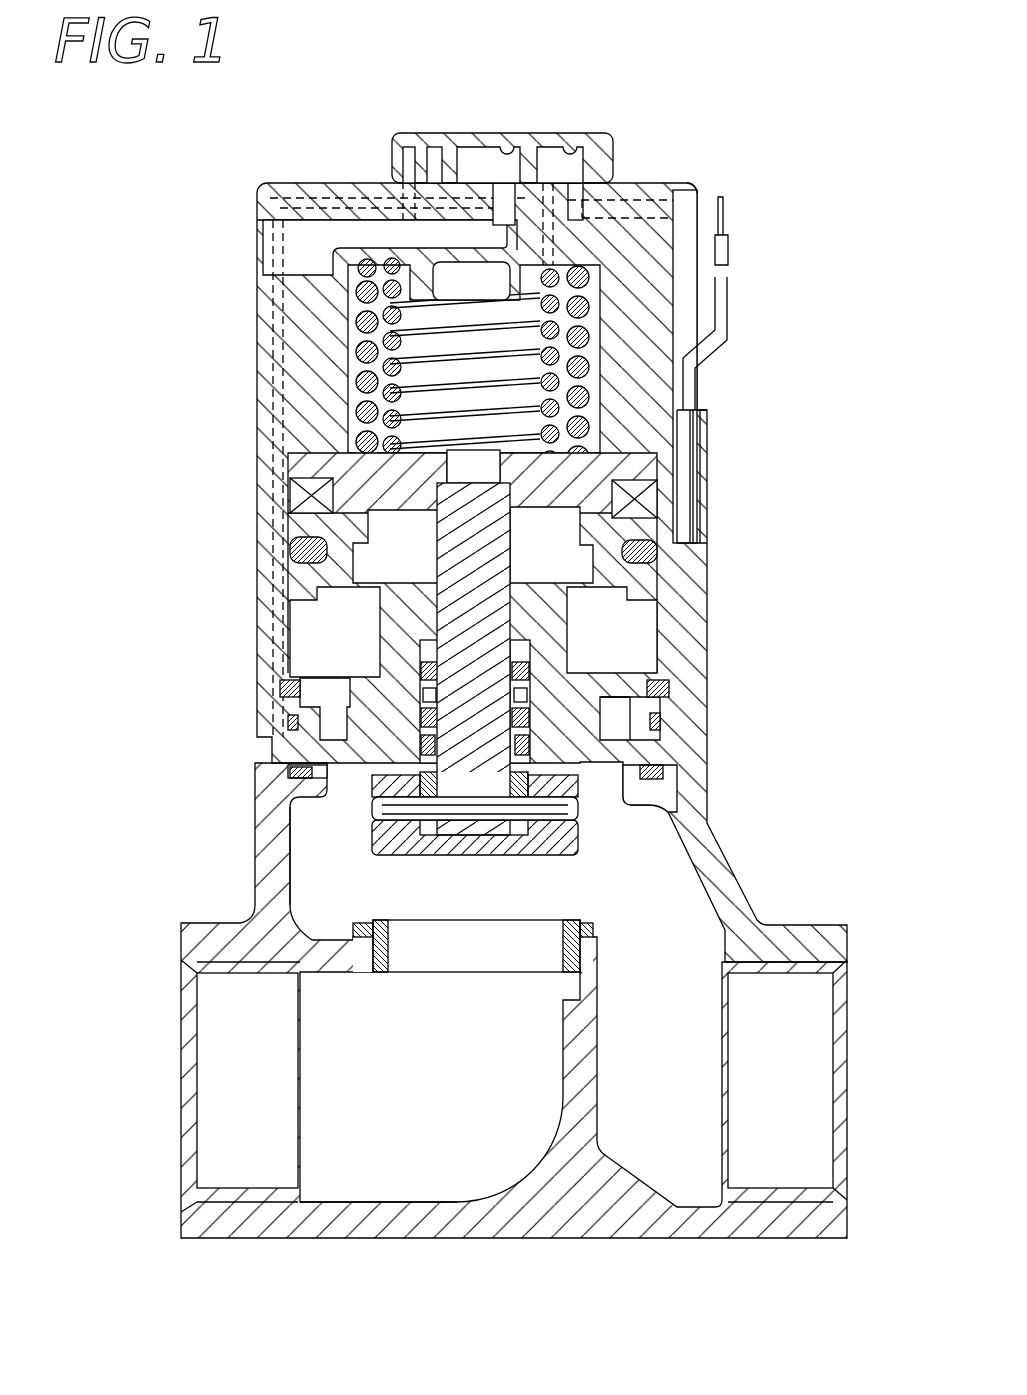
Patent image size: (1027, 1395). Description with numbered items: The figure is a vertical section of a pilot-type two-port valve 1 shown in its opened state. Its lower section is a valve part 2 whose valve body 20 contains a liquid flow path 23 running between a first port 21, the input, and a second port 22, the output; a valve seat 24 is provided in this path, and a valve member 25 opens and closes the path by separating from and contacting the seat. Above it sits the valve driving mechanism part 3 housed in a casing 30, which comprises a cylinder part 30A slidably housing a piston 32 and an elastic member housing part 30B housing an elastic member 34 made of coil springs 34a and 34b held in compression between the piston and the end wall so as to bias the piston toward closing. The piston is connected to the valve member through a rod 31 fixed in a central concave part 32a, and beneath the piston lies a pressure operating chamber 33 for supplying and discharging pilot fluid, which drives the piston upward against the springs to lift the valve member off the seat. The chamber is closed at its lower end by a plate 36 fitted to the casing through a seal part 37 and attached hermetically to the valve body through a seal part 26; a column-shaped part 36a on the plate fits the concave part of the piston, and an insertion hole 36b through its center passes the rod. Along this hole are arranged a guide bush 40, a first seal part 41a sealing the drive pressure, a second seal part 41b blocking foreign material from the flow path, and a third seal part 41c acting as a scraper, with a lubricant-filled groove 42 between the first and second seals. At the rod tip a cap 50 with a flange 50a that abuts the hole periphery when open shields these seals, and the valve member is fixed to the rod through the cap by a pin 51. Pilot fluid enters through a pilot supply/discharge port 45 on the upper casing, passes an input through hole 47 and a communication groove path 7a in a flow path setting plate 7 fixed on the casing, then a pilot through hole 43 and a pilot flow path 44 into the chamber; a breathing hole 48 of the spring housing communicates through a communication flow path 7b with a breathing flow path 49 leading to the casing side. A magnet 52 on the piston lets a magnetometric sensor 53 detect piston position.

The pilot-type two-port valve 1 is at (768, 146).
The valve part 2 is at (812, 884).
The valve driving mechanism part 3 is at (737, 491).
The flow path setting plate 7 is at (530, 123).
The communication groove path 7a is at (513, 137).
The communication flow path 7b is at (580, 137).
The valve body 20 is at (278, 870).
The first port 21 is at (223, 1060).
The second port 22 is at (813, 1030).
The liquid flow path 23 is at (450, 1157).
The valve seat 24 is at (572, 920).
The valve member 25 is at (469, 837).
The seal part 26 is at (667, 772).
The casing 30 is at (693, 567).
The cylinder part 30A is at (660, 650).
The elastic member housing part 30B is at (672, 300).
The rod 31 is at (458, 616).
The piston 32 is at (410, 543).
The concave part 32a is at (330, 522).
The pressure operating chamber 33 is at (640, 617).
The elastic member 34 is at (362, 369).
The coil spring 34a is at (360, 318).
The coil spring 34b is at (362, 350).
The plate 36 is at (570, 723).
The column-shaped part 36a is at (300, 556).
The insertion hole 36b is at (623, 767).
The seal part 37 is at (656, 712).
The guide bush 40 is at (425, 670).
The first seal part 41a is at (285, 688).
The second seal part 41b is at (327, 738).
The third seal part 41c is at (300, 772).
The groove 42 is at (290, 722).
The pilot through hole 43 is at (463, 140).
The pilot flow path 44 is at (257, 347).
The pilot supply/discharge port 45 is at (263, 243).
The input through hole 47 is at (503, 193).
The breathing hole 48 is at (545, 183).
The breathing flow path 49 is at (647, 193).
The cap 50 is at (434, 837).
The flange 50a is at (373, 770).
The pin 51 is at (542, 812).
The magnet 52 is at (672, 508).
The magnetometric sensor 53 is at (687, 440).